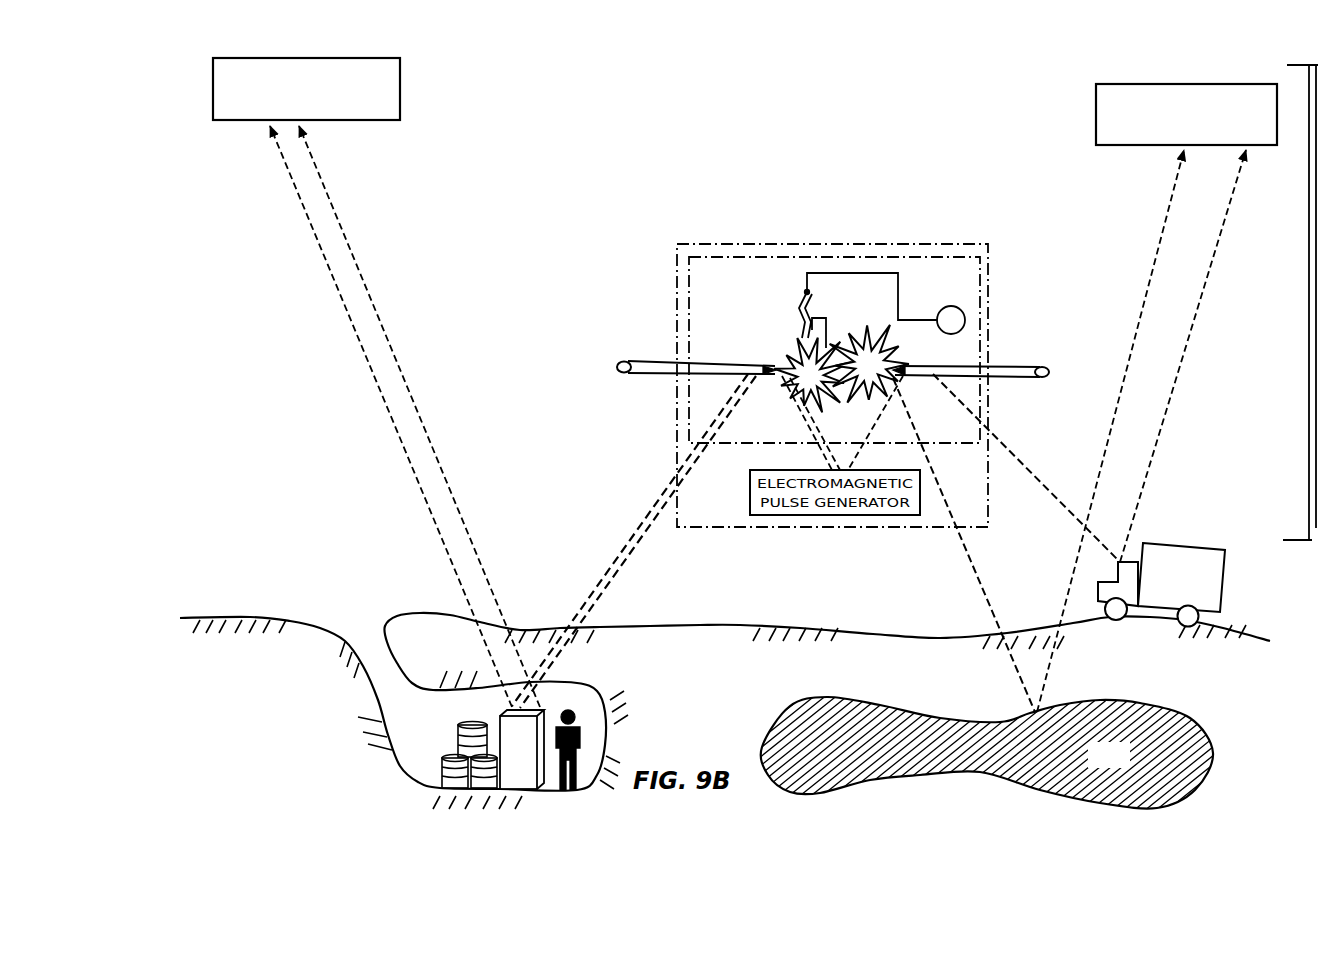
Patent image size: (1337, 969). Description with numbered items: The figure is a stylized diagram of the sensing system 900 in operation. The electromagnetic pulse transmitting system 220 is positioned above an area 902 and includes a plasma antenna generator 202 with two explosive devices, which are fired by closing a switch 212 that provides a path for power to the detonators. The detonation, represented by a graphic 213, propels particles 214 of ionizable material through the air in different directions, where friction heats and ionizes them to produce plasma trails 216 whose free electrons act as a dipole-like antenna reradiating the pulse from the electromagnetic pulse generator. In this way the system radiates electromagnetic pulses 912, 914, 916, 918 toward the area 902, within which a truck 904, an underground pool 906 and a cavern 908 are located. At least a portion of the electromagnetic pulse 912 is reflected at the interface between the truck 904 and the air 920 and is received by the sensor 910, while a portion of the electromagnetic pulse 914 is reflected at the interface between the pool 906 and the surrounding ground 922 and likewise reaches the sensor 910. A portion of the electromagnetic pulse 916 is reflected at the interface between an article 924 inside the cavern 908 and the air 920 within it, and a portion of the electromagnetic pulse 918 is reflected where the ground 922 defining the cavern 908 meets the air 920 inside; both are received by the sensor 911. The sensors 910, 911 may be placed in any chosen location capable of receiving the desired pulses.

The plasma antenna generator 202 is at (689, 308).
The switch 212 is at (812, 298).
The graphic 213 is at (792, 348).
The particles 214 is at (620, 366).
The plasma trails 216 is at (673, 367).
The electromagnetic pulse transmitting system 220 is at (995, 278).
The sensing system 900 is at (1316, 528).
The area 902 is at (583, 474).
The truck 904 is at (1160, 566).
The underground pool 906 is at (1098, 719).
The cavern 908 is at (586, 708).
The sensor 910 is at (1105, 128).
The sensor 911 is at (387, 97).
The electromagnetic pulse 912 is at (1018, 452).
The electromagnetic pulse 914 is at (980, 582).
The electromagnetic pulse 916 is at (620, 576).
The electromagnetic pulse 918 is at (618, 560).
The air 920 is at (1125, 767).
The ground 922 is at (740, 626).
The article 924 is at (522, 777).